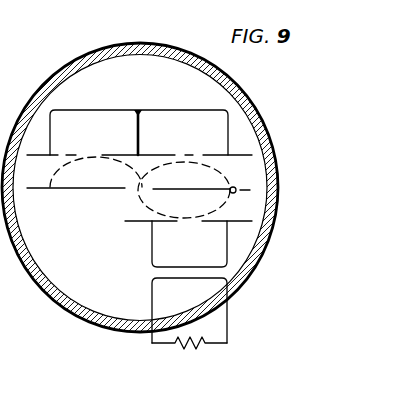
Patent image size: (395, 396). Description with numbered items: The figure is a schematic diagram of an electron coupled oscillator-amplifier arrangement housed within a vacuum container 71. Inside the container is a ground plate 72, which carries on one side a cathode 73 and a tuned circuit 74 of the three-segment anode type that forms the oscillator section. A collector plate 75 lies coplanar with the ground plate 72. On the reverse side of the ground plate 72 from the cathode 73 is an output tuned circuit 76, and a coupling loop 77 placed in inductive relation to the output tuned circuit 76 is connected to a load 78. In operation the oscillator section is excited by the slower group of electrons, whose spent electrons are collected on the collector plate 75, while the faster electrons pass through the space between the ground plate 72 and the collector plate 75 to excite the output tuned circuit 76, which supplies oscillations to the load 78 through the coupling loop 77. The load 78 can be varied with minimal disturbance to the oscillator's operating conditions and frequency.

The vacuum container 71 is at (254, 119).
The ground plate 72 is at (249, 191).
The cathode 73 is at (235, 188).
The tuned circuit 74 is at (197, 109).
The collector plate 75 is at (40, 189).
The output tuned circuit 76 is at (152, 238).
The coupling loop 77 is at (152, 290).
The load 78 is at (194, 351).